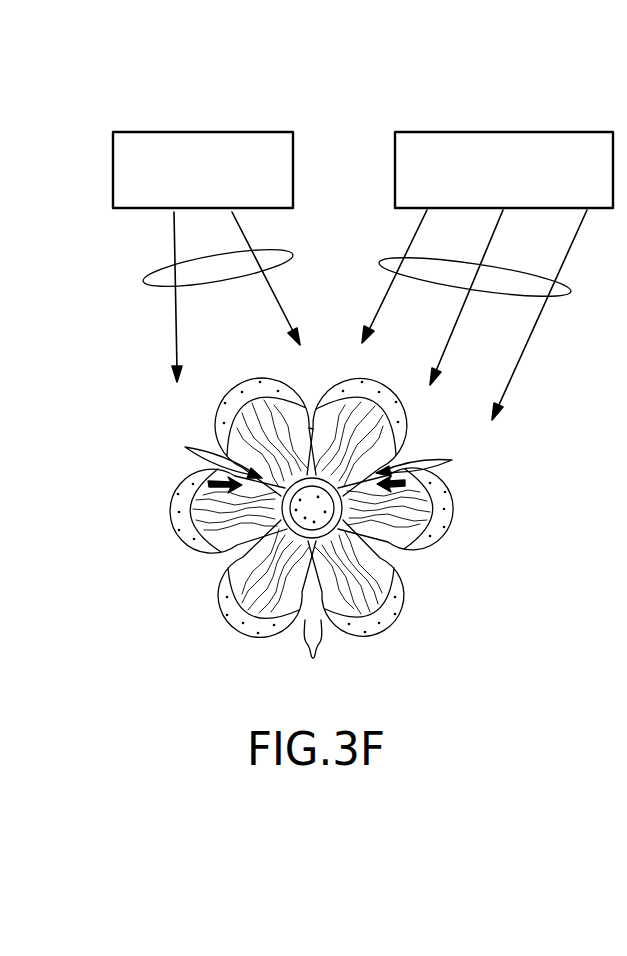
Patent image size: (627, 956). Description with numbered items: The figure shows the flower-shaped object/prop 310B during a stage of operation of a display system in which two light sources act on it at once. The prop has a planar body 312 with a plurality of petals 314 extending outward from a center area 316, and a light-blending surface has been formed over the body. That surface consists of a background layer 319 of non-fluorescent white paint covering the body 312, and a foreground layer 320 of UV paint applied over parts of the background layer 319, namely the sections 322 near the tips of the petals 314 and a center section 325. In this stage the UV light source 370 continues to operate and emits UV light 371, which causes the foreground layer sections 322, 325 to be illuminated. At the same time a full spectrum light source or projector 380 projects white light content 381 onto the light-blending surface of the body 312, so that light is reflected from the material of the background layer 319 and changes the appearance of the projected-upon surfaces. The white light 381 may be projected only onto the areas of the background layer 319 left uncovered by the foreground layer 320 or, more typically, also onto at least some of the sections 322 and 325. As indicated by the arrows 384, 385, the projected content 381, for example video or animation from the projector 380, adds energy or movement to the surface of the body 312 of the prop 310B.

The UV light source 370 is at (236, 132).
The full spectrum light source or projector 380 is at (443, 132).
The UV light 371 is at (143, 282).
The white light (content) 381 is at (572, 292).
The flower-shaped object/prop 310B is at (234, 350).
The body 312 is at (187, 571).
The petals 314 is at (309, 657).
The center area 316 is at (343, 520).
The background layer 319 is at (367, 391).
The foreground layer 320 is at (422, 405).
The foreground layer sections near petal tips 322 is at (213, 405).
The center section of foreground layer 325 is at (310, 420).
The arrow indicating energy or movement 384 is at (185, 447).
The arrow indicating energy or movement 385 is at (452, 460).